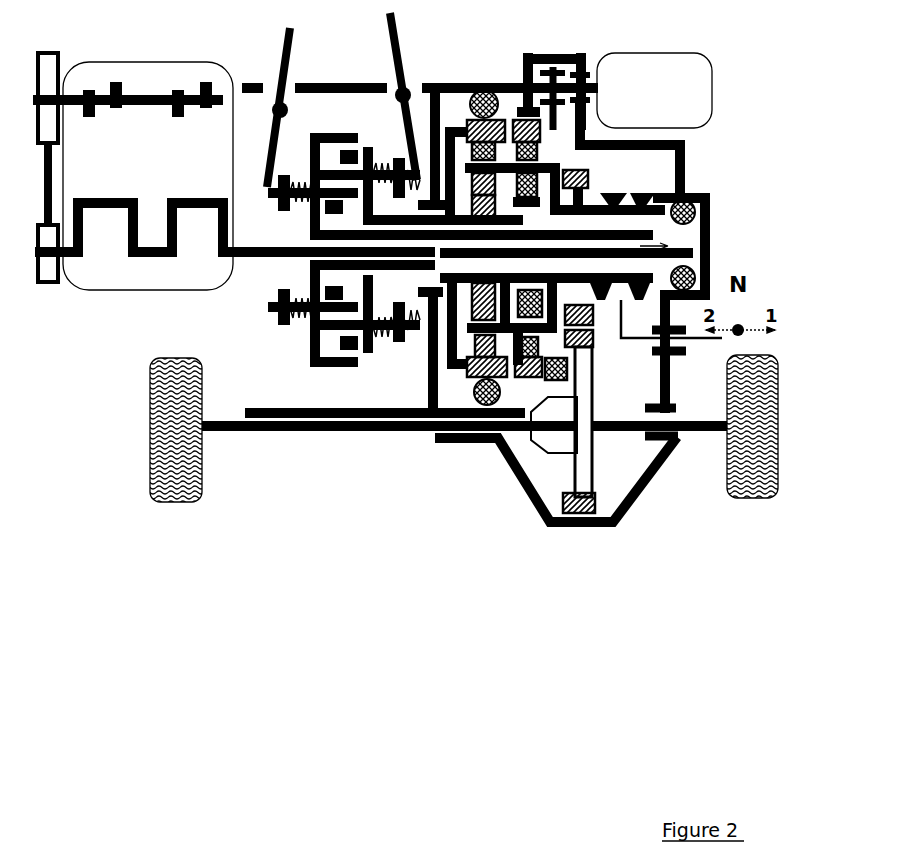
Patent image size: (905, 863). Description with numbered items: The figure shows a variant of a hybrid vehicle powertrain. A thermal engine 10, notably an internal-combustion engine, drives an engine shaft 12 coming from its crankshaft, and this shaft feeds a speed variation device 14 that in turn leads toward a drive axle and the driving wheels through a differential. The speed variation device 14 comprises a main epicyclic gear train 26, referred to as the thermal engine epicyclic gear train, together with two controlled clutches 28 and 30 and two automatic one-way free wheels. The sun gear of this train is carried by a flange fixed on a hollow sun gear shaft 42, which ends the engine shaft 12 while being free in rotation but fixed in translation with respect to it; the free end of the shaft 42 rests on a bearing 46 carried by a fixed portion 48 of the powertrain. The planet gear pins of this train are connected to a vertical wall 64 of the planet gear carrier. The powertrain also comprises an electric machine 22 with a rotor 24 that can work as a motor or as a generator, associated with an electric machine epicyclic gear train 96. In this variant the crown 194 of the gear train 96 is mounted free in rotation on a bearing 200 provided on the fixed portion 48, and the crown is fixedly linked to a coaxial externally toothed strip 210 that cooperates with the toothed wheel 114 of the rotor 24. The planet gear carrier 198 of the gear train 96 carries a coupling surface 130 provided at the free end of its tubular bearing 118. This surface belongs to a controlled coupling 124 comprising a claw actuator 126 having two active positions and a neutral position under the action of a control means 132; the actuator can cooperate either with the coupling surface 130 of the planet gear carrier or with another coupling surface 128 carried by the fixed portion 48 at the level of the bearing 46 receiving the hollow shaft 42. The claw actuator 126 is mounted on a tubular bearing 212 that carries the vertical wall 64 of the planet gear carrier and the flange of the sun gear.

The thermal engine 10 is at (143, 172).
The engine shaft 12 is at (300, 245).
The speed variation device 14 is at (343, 389).
The electric machine 22 is at (662, 100).
The rotor 24 is at (600, 92).
The main epicyclic gear train 26 is at (451, 427).
The controlled clutch 28 is at (300, 266).
The controlled clutch 30 is at (300, 150).
The sun gear shaft 42 is at (712, 238).
The bearing 46 is at (710, 190).
The fixed portion 48 is at (675, 398).
The vertical wall 64 is at (490, 227).
The electric machine epicyclic gear train 96 is at (578, 352).
The toothed wheel 114 is at (556, 66).
The tubular bearing 118 is at (545, 228).
The controlled coupling 124 is at (632, 327).
The claw actuator 126 is at (660, 150).
The coupling surface 128 is at (640, 192).
The coupling surface 130 is at (590, 320).
The control means 132 is at (716, 348).
The crown 194 is at (470, 450).
The planet gear carrier 198 is at (570, 165).
The bearing 200 is at (545, 405).
The externally toothed strip 210 is at (600, 395).
The tubular bearing 212 is at (640, 246).